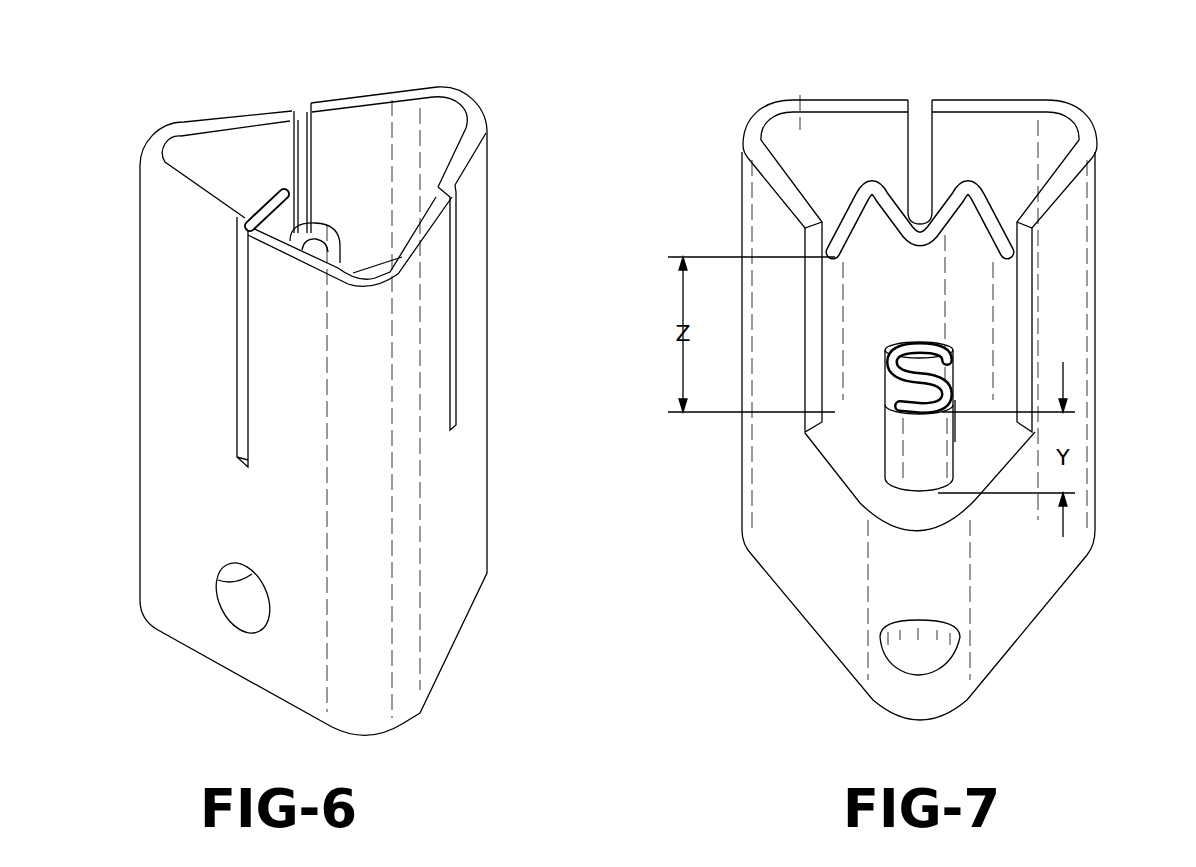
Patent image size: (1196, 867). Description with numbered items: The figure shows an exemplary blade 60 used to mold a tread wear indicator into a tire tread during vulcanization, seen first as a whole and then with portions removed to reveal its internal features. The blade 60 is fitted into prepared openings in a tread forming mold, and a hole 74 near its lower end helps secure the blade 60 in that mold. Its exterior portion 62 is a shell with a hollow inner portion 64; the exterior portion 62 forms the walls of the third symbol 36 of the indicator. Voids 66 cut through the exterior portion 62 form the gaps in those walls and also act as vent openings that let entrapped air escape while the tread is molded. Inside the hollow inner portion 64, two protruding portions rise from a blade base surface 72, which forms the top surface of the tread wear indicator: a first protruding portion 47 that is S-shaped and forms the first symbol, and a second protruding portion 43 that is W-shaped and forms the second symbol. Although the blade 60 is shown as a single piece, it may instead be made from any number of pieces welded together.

In FIG. 6, the third symbol 36 is at (467, 102).
In FIG. 6, the second protruding portion 43 is at (273, 200).
In FIG. 7, the second protruding portion 43 is at (857, 193).
In FIG. 7, the first protruding portion 47 is at (918, 345).
In FIG. 6, the blade 60 is at (138, 365).
In FIG. 7, the blade 60 is at (740, 487).
In FIG. 6, the exterior portion 62 is at (242, 120).
In FIG. 7, the exterior portion 62 is at (1007, 108).
In FIG. 6, the hollow inner portion 64 is at (450, 128).
In FIG. 6, the voids 66 is at (300, 120).
In FIG. 7, the voids 66 is at (920, 108).
In FIG. 7, the blade base surface 72 is at (887, 482).
In FIG. 6, the hole 74 is at (216, 578).
In FIG. 7, the hole 74 is at (920, 660).